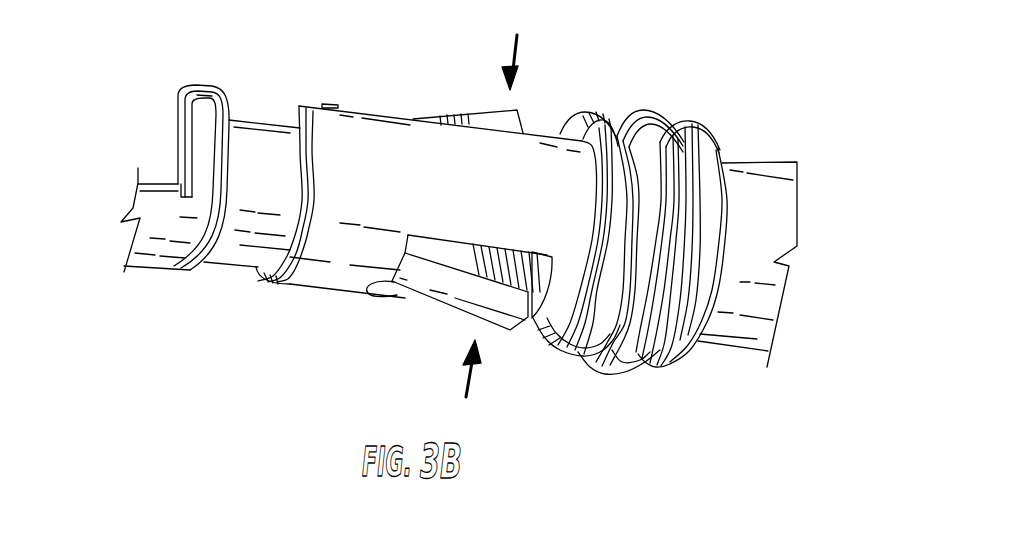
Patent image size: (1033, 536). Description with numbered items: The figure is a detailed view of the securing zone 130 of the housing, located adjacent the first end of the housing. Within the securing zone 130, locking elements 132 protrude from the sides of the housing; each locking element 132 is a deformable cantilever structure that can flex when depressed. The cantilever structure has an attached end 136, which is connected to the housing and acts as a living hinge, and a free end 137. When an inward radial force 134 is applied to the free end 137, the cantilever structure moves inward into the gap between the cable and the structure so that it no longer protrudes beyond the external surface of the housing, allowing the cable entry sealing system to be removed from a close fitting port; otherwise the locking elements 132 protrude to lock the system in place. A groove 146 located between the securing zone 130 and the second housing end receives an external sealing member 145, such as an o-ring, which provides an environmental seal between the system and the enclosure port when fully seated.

The securing zone 130 is at (459, 212).
The locking element 132 is at (513, 107).
The inward radial force 134 is at (514, 54).
The attached end 136 is at (385, 285).
The free end 137 is at (510, 325).
The external sealing member 145 is at (660, 134).
The groove 146 is at (685, 128).